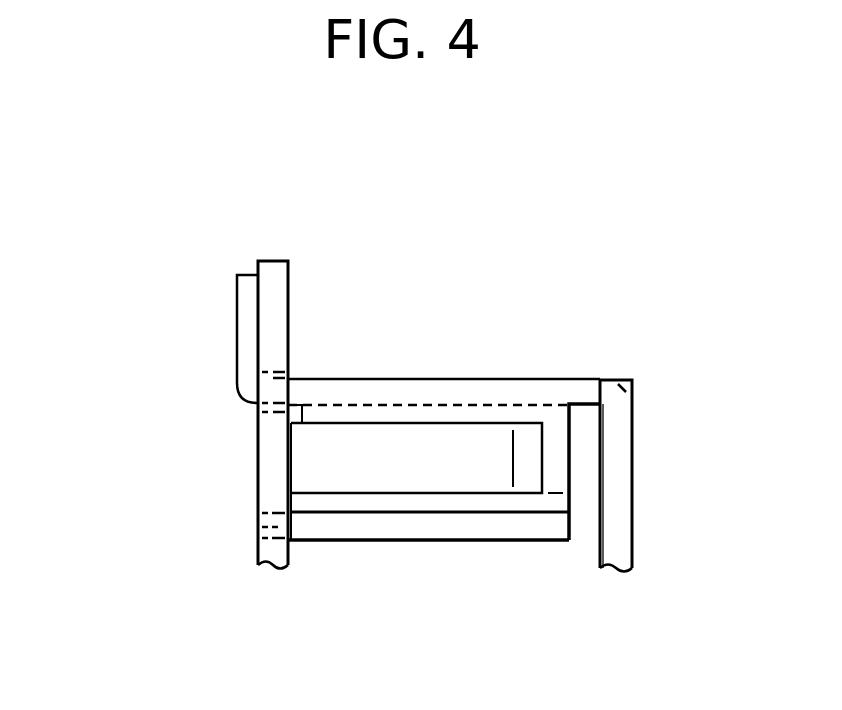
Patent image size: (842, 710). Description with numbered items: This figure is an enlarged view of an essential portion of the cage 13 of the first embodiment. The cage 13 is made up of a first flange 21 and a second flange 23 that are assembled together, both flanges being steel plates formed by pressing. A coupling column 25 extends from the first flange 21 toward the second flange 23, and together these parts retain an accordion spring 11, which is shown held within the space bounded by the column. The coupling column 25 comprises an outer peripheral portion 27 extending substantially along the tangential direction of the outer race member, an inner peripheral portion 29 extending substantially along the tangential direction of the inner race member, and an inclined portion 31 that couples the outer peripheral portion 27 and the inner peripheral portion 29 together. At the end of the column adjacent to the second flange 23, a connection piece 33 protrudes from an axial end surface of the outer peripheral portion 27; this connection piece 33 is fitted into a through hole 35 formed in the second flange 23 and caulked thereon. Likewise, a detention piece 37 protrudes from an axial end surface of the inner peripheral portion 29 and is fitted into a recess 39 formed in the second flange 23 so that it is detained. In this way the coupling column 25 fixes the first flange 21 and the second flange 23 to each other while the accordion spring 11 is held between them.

The cage 13 is at (136, 268).
The connection piece 33 is at (248, 325).
The through hole 35 is at (257, 405).
The second flange 23 is at (251, 460).
The recess 39 is at (270, 513).
The detention piece 37 is at (268, 527).
The outer peripheral portion 27 is at (393, 385).
The coupling column 25 is at (520, 365).
The first flange 21 is at (639, 454).
The accordion spring 11 is at (333, 470).
The inner peripheral portion 29 is at (418, 524).
The inclined portion 31 is at (558, 446).